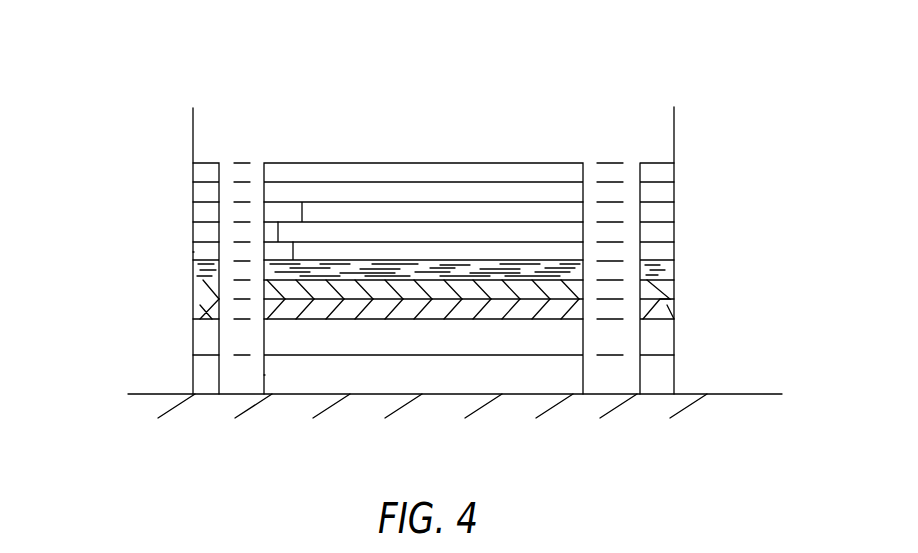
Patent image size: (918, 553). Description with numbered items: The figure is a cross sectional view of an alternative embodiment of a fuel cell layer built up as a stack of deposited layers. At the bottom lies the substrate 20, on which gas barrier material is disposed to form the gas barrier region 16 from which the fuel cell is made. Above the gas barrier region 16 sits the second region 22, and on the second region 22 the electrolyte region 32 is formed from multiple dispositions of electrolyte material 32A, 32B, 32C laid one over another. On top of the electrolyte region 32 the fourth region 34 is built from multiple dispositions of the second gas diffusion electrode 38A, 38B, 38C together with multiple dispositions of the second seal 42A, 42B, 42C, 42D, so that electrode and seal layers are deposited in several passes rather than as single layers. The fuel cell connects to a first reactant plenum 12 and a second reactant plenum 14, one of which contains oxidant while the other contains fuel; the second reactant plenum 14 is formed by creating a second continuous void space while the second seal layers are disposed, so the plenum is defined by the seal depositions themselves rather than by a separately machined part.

The first reactant plenum 12 is at (241, 155).
The second reactant plenum 14 is at (603, 158).
The gas barrier region 16 is at (707, 390).
The substrate 20 is at (753, 394).
The second region 22 is at (697, 347).
The electrolyte region 32 is at (446, 288).
The electrolyte material 32A is at (665, 306).
The electrolyte material 32B is at (662, 286).
The electrolyte material 32C is at (662, 264).
The fourth region 34 is at (125, 254).
The second gas diffusion electrode 38A is at (570, 251).
The second gas diffusion electrode 38B is at (576, 236).
The second gas diffusion electrode 38C is at (578, 217).
The second seal 42A is at (202, 250).
The second seal 42B is at (202, 232).
The second seal 42C is at (192, 213).
The second seal 42D is at (192, 190).